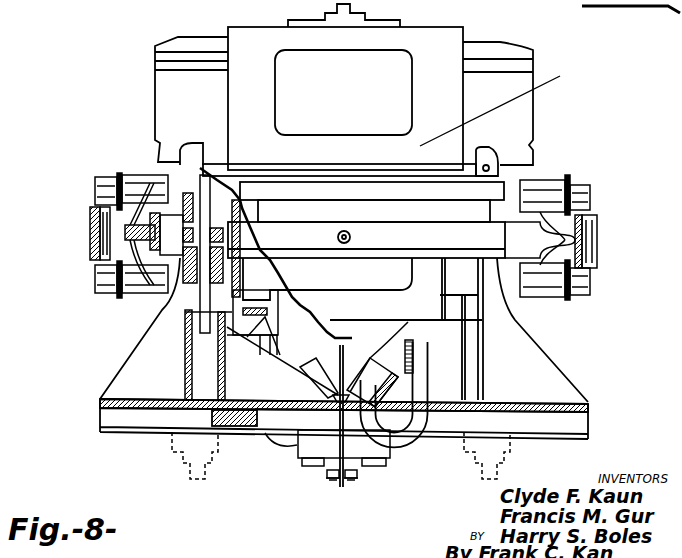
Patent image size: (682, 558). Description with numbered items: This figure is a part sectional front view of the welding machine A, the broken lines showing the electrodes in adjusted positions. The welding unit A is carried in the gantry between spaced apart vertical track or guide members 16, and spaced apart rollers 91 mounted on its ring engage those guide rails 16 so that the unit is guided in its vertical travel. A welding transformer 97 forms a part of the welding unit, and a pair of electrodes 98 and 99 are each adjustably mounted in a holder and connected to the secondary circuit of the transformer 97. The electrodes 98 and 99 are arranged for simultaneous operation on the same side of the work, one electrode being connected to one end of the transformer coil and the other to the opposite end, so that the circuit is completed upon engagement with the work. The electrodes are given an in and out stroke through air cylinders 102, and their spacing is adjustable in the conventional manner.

The air cylinders 102 is at (165, 103).
The welding machine A is at (500, 97).
The rollers 91 is at (589, 192).
The vertical track or guide members 16 is at (594, 238).
The welding transformer 97 is at (295, 334).
The electrode 98 is at (205, 470).
The electrode 99 is at (357, 480).